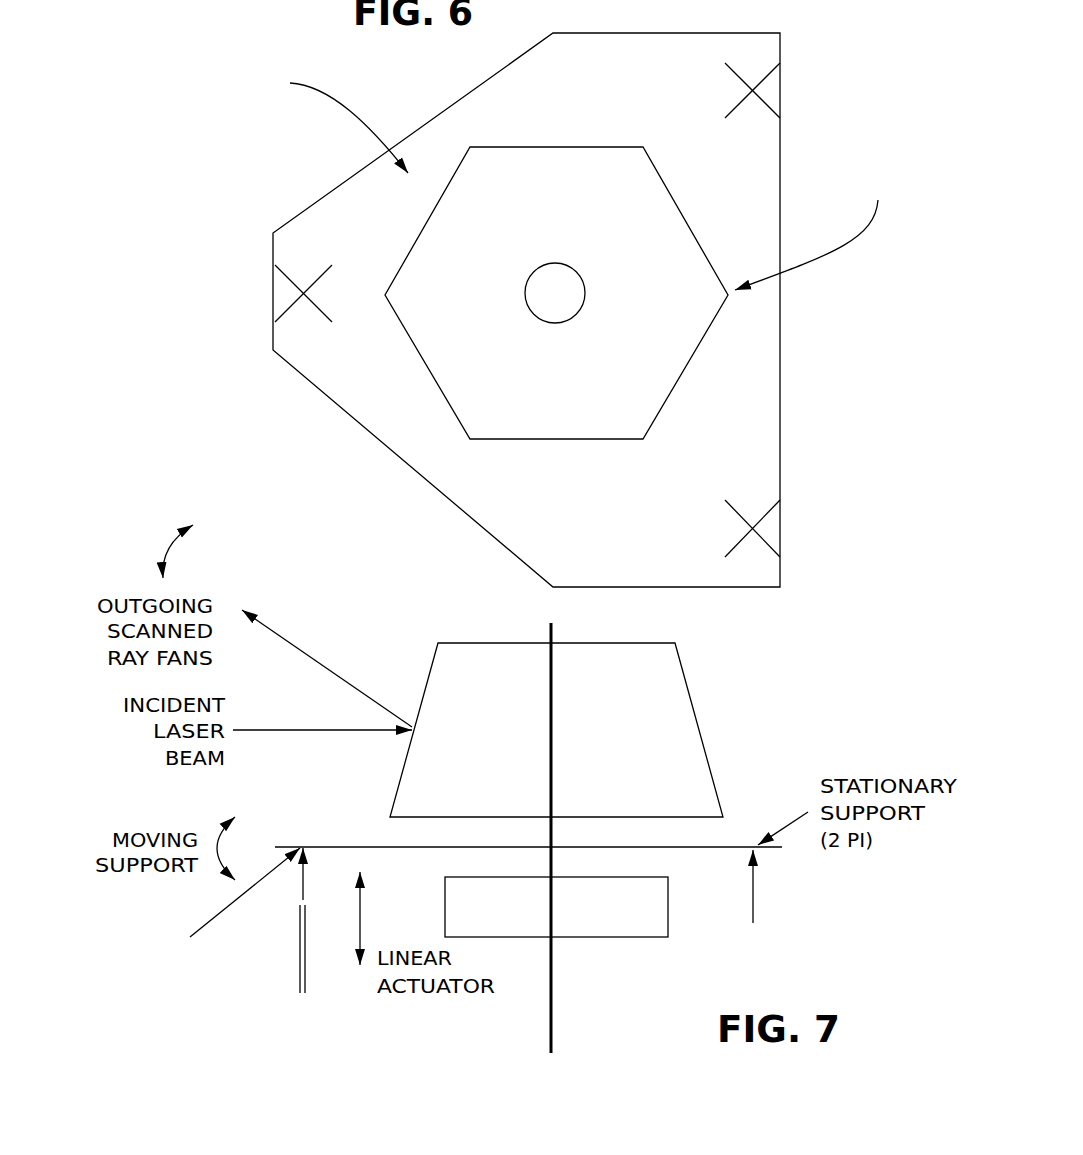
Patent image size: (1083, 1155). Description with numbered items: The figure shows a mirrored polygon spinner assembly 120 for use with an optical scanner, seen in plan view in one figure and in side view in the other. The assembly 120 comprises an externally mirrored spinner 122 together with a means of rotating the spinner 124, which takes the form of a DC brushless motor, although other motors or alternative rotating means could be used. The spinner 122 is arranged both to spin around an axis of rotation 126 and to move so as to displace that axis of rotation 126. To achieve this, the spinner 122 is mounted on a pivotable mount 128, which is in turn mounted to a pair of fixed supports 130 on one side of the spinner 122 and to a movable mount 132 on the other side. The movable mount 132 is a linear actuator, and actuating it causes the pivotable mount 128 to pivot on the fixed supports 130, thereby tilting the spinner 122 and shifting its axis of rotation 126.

In FIG. 6, the mirrored polygon spinner assembly 120 is at (920, 370).
In FIG. 6, the spinner 122 is at (457, 423).
In FIG. 7, the spinner 122 is at (430, 677).
In FIG. 7, the means of rotating the spinner 124 is at (562, 922).
In FIG. 7, the axis of rotation 126 is at (555, 1032).
In FIG. 6, the pivotable mount 128 is at (350, 398).
In FIG. 7, the pivotable mount 128 is at (350, 843).
In FIG. 6, the fixed supports 130 is at (753, 520).
In FIG. 7, the fixed supports 130 is at (758, 875).
In FIG. 6, the movable mount 132 is at (270, 293).
In FIG. 7, the movable mount 132 is at (308, 963).